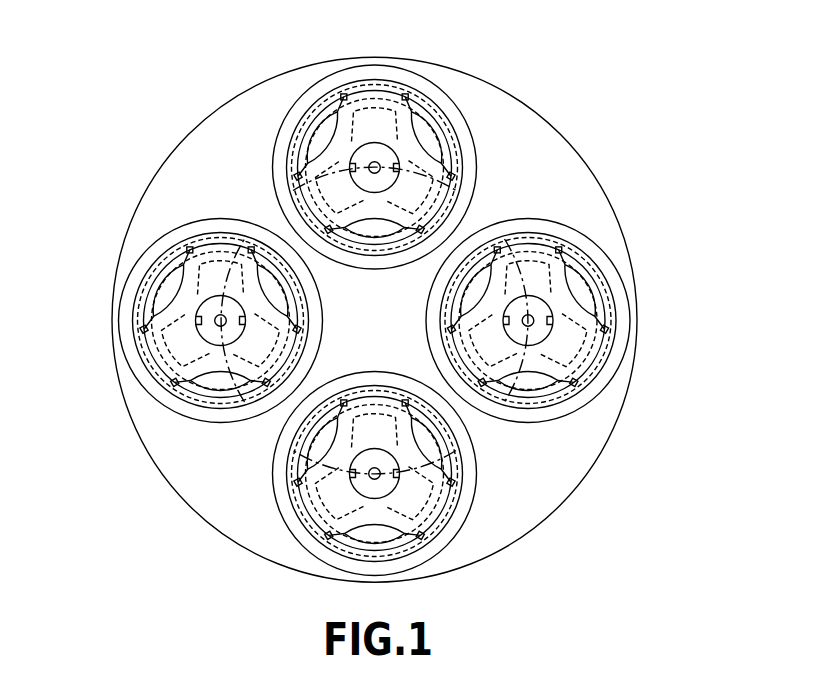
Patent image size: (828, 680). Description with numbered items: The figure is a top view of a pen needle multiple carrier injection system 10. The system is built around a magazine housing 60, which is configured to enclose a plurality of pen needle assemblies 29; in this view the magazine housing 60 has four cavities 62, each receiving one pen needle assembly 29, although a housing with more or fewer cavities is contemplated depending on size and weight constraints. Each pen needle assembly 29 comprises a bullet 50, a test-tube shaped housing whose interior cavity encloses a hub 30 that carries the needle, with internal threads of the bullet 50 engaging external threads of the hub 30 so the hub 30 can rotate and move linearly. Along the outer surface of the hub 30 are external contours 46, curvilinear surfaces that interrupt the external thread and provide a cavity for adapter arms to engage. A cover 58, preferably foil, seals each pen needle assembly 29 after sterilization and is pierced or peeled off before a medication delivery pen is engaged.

The multiple carrier injection system 10 is at (662, 108).
The magazine housing 60 is at (610, 443).
The cavities 62 is at (625, 371).
The pen needle assembly 29 is at (277, 134).
The hub 30 is at (347, 135).
The bullet 50 is at (427, 102).
The cover 58 is at (273, 178).
The external contours 46 is at (572, 288).